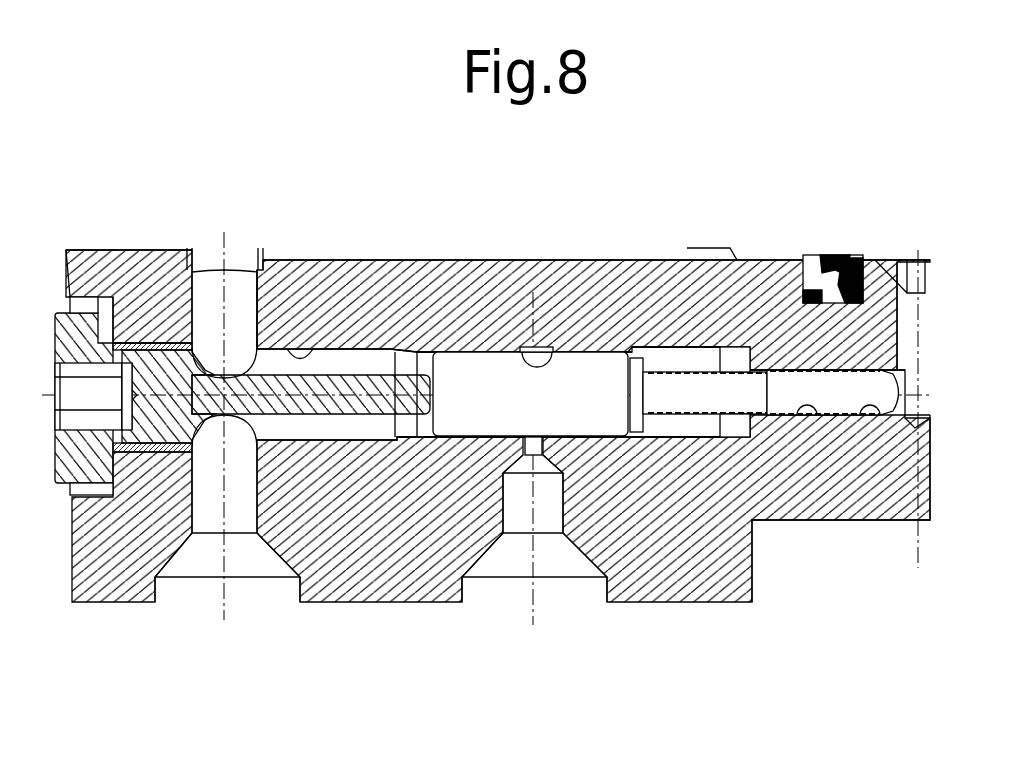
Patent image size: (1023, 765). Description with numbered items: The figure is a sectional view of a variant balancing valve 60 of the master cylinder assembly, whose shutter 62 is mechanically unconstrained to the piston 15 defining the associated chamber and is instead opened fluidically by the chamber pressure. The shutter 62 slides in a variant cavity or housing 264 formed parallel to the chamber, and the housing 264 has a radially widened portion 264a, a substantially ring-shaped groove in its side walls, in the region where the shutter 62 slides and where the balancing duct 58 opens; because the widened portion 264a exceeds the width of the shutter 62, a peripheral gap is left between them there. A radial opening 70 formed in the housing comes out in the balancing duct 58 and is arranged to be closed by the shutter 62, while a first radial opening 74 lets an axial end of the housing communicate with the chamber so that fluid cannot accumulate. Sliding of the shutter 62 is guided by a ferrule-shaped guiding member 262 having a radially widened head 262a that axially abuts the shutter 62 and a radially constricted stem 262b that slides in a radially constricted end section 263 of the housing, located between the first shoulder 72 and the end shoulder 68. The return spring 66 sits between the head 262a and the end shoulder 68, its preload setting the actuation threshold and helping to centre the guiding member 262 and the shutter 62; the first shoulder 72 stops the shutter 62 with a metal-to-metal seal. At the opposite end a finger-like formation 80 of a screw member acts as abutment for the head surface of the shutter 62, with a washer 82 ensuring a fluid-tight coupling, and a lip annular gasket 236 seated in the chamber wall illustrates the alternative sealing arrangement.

The piston 15 is at (893, 255).
The balancing duct 58 is at (487, 575).
The balancing valve 60 is at (464, 338).
The shutter 62 is at (477, 370).
The return spring 66 is at (792, 362).
The end shoulder 68 is at (863, 417).
The radial opening 70 is at (531, 455).
The first shoulder 72 is at (738, 437).
The first radial opening 74 is at (235, 272).
The finger-like formation 80 is at (165, 367).
The washer 82 is at (100, 320).
The lip annular gasket 236 is at (847, 255).
The guiding member 262 is at (699, 352).
The radially widened head 262a is at (637, 357).
The radially constricted stem 262b is at (683, 437).
The end section 263 is at (813, 405).
The housing 264 is at (318, 349).
The widened portion 264a is at (548, 350).